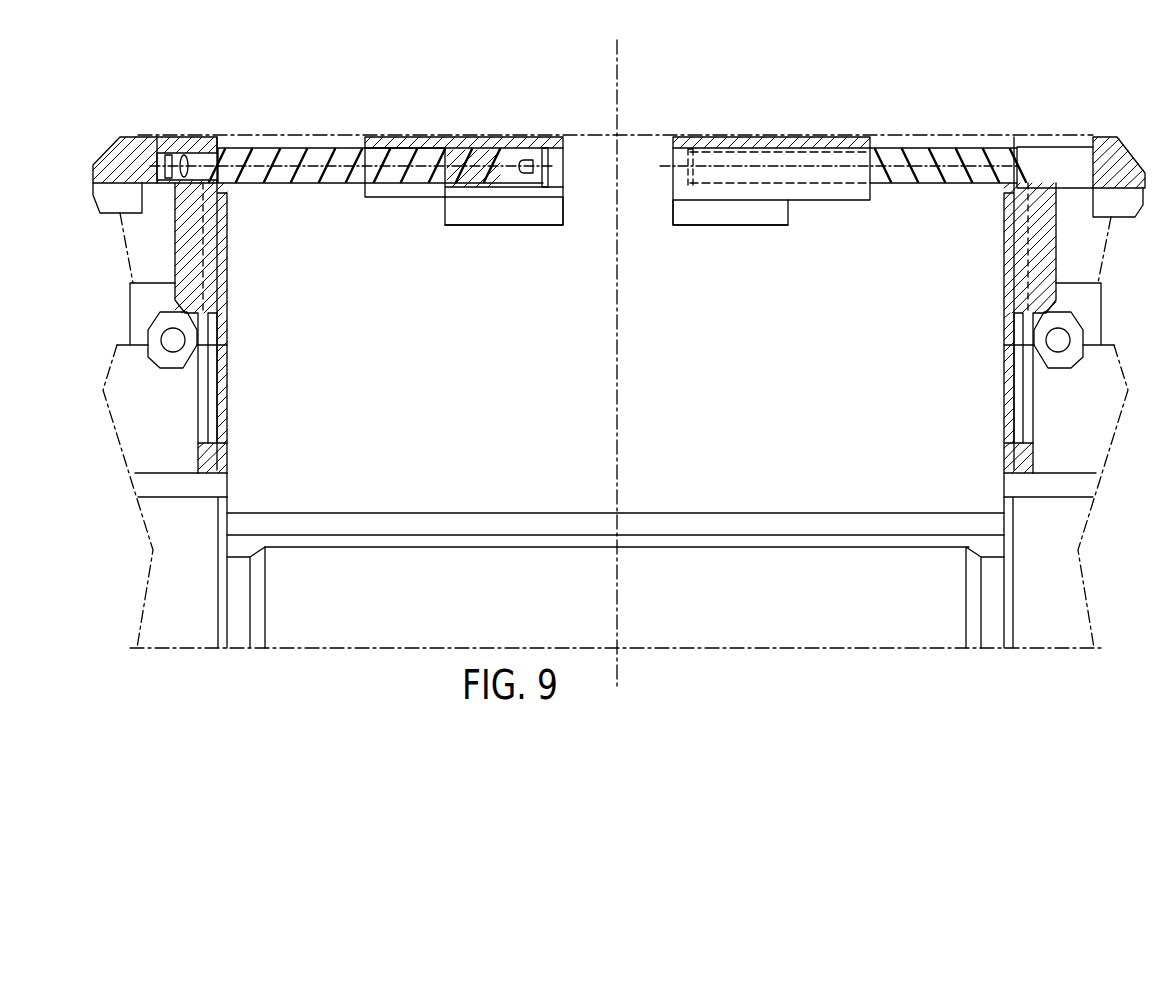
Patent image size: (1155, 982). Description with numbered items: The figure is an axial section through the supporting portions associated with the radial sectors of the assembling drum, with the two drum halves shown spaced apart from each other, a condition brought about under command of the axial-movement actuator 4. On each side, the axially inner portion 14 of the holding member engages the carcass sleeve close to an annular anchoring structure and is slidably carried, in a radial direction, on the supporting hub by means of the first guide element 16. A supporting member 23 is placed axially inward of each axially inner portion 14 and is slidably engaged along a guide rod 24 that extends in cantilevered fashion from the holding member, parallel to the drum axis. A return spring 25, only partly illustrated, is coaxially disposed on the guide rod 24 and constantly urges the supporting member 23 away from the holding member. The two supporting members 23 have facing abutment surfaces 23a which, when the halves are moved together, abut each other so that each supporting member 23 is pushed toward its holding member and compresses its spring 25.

The axial-movement actuator 4 is at (415, 617).
The axially inner portion 14 is at (124, 146).
The first guide element 16 is at (213, 393).
The supporting member 23 is at (492, 137).
The abutment surface 23a is at (563, 207).
The guide rod 24 is at (337, 173).
The return spring 25 is at (272, 172).